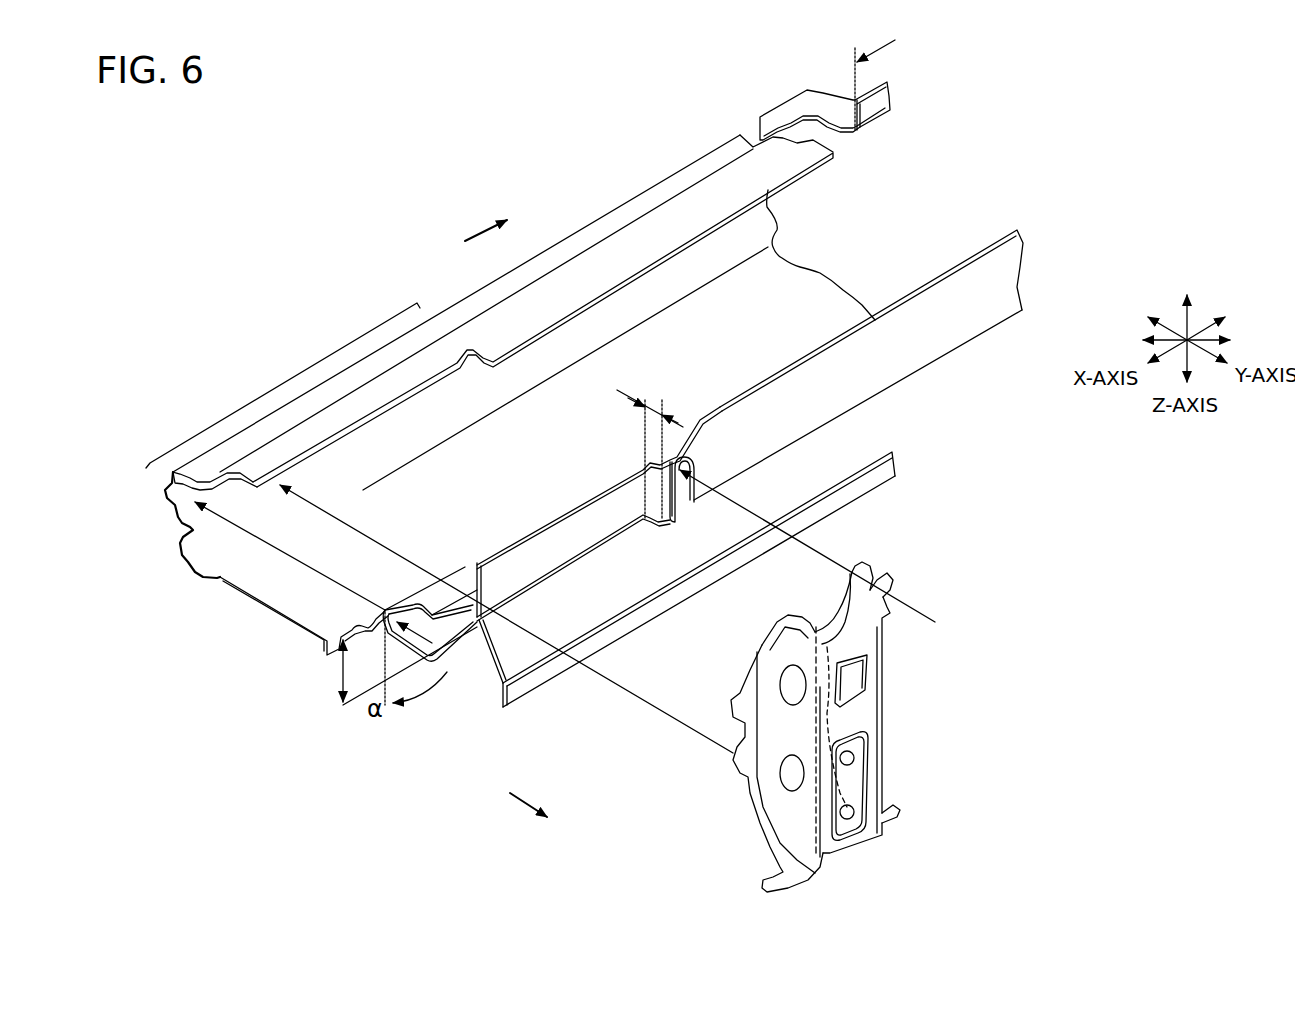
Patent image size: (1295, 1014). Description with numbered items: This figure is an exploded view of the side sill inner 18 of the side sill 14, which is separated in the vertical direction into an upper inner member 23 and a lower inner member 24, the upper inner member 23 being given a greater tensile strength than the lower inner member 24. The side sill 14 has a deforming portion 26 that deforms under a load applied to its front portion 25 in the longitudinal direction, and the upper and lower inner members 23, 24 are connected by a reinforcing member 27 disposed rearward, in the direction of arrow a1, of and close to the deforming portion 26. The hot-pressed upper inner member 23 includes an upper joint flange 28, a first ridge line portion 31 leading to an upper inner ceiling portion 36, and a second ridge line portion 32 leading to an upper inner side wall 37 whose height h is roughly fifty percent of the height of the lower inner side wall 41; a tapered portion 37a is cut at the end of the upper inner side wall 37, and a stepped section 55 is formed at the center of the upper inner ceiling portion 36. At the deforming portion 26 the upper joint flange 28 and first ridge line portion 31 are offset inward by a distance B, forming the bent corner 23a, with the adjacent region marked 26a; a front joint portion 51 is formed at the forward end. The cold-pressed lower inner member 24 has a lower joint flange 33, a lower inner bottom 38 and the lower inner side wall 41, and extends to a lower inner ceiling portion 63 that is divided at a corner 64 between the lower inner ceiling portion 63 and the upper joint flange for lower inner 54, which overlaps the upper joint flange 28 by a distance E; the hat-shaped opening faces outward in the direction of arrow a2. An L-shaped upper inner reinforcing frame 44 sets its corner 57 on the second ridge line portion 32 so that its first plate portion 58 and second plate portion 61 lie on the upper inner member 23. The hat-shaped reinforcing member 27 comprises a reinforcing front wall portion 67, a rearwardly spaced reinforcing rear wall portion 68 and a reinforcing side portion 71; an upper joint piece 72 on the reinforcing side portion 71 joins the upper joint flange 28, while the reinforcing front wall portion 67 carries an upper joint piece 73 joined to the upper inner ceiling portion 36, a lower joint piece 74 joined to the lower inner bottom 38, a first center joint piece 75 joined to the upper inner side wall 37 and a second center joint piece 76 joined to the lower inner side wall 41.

The side sill 14 is at (417, 243).
The side sill inner 18 is at (552, 240).
The lower inner ceiling portion 63 is at (637, 243).
The upper joint flange for lower inner 54 is at (873, 110).
The corner 64 is at (865, 128).
The deforming portion 26 is at (296, 362).
The front joint portion 51 is at (537, 593).
The upper joint flange 28 is at (877, 364).
The first ridge line portion 31 is at (887, 395).
The bent portion 26a is at (633, 466).
The bent corner 23a is at (653, 490).
The lower inner side wall 41 is at (217, 528).
The front portion 25 is at (213, 580).
The lower inner member 24 is at (240, 620).
The lower inner bottom 38 is at (303, 603).
The lower joint flange 33 is at (320, 653).
The tapered portion 37a is at (383, 632).
The upper inner side wall 37 is at (412, 640).
The stepped section 55 is at (430, 648).
The second ridge line portion 32 is at (427, 605).
The upper inner ceiling portion 36 is at (465, 600).
The upper inner member 23 is at (475, 647).
The first plate portion 58 is at (510, 687).
The upper inner reinforcing frame 44 is at (568, 677).
The second plate portion 61 is at (650, 613).
The corner 57 is at (673, 578).
The reinforcing member 27 is at (905, 635).
The reinforcing front wall portion 67 is at (767, 673).
The upper joint piece 73 is at (767, 640).
The reinforcing rear wall portion 68 is at (833, 620).
The upper joint piece 72 is at (860, 568).
The first center joint piece 75 is at (845, 660).
The reinforcing side portion 71 is at (855, 716).
The second center joint piece 76 is at (868, 750).
The lower joint piece 74 is at (897, 815).
The arrow a1 is at (482, 224).
The arrow a2 is at (544, 818).
The desired distance B is at (650, 447).
The overlapping distance E is at (875, 77).
The height h is at (395, 666).